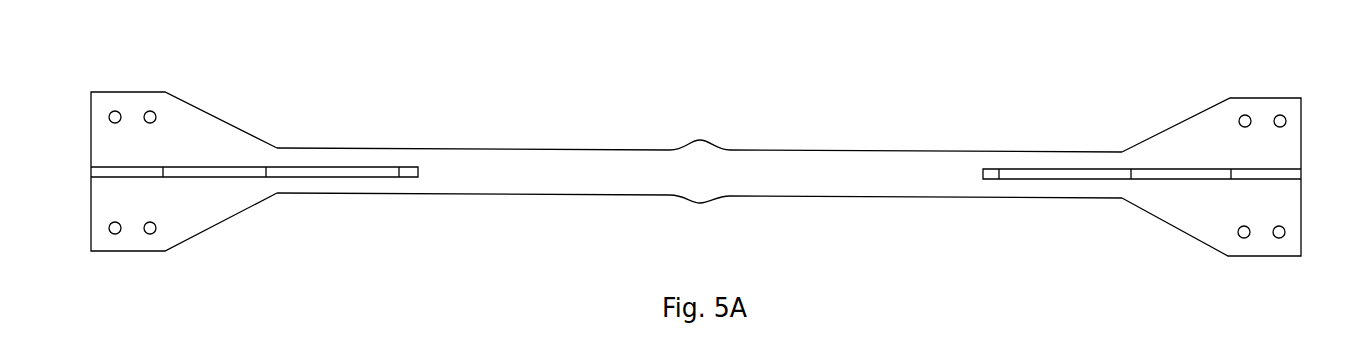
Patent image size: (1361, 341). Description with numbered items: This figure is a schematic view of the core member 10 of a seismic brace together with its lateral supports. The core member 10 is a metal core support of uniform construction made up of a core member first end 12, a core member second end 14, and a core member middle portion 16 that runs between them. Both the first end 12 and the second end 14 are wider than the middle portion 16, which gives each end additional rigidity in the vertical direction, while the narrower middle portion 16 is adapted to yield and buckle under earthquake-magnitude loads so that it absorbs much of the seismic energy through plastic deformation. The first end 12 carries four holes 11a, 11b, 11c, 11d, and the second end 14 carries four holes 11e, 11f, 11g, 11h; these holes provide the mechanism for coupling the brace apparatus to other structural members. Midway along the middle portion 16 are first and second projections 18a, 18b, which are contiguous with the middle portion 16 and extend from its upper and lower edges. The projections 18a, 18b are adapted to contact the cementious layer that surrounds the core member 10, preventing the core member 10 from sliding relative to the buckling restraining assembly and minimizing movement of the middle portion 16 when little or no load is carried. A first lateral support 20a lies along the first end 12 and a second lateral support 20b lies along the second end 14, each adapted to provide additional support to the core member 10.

The core member 10 is at (348, 157).
The core member first end 12 is at (93, 108).
The core member second end 14 is at (1293, 140).
The core member middle portion 16 is at (795, 152).
The first projection 18a is at (700, 140).
The second projection 18b is at (700, 203).
The first lateral support 20a is at (115, 172).
The second lateral support 20b is at (1263, 170).
The hole 11a is at (115, 111).
The hole 11b is at (150, 111).
The hole 11c is at (117, 234).
The hole 11d is at (155, 233).
The hole 11e is at (1245, 115).
The hole 11f is at (1280, 115).
The hole 11g is at (1244, 238).
The hole 11h is at (1279, 238).